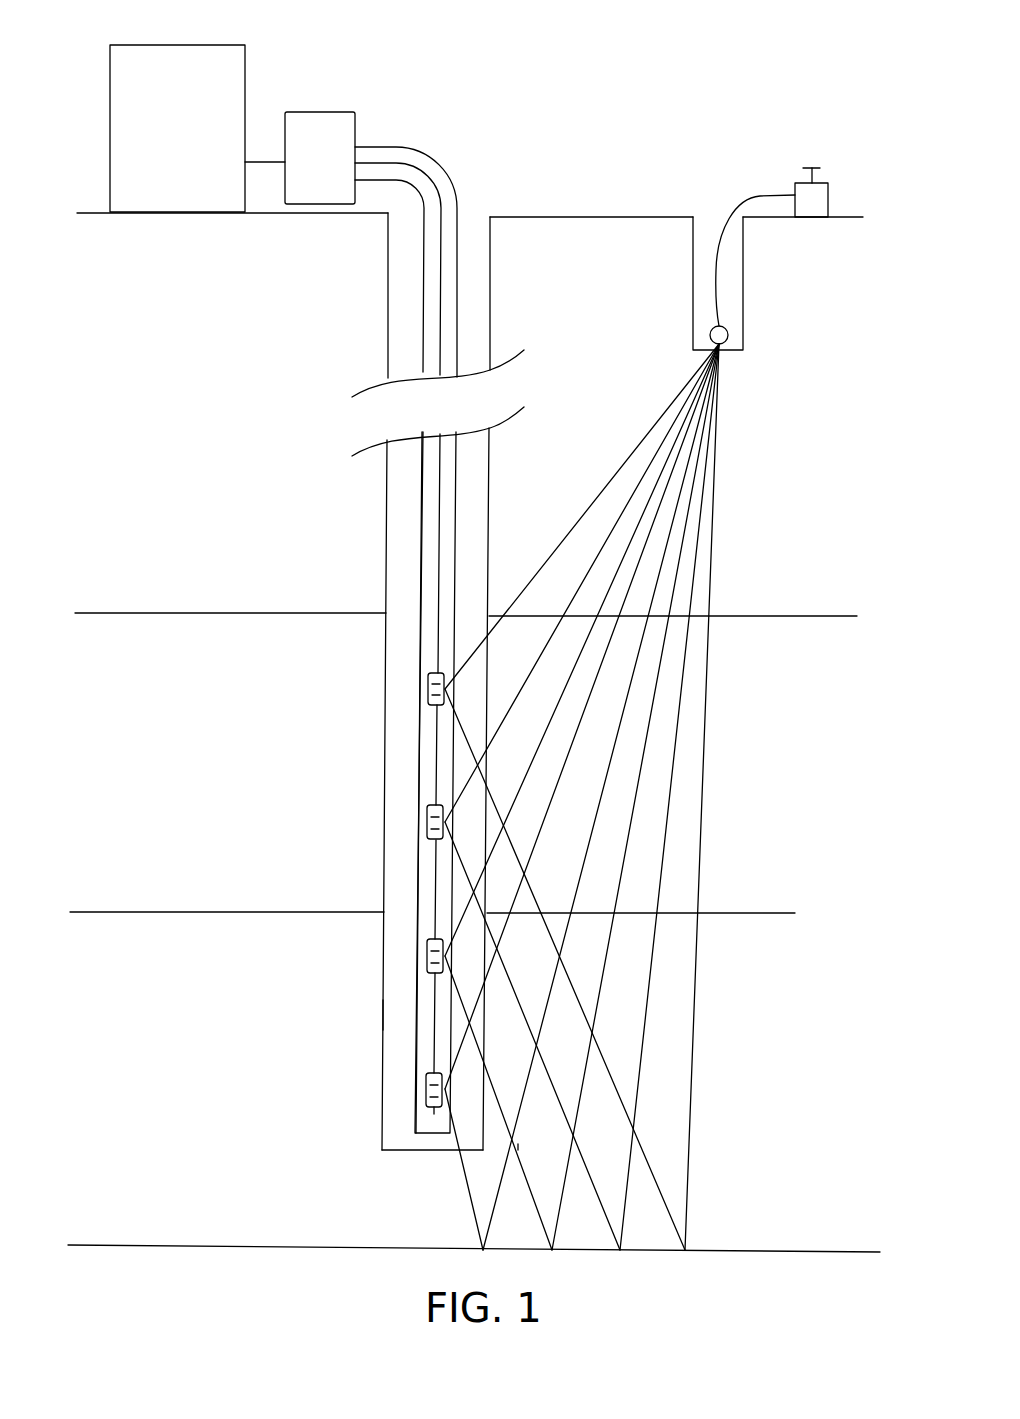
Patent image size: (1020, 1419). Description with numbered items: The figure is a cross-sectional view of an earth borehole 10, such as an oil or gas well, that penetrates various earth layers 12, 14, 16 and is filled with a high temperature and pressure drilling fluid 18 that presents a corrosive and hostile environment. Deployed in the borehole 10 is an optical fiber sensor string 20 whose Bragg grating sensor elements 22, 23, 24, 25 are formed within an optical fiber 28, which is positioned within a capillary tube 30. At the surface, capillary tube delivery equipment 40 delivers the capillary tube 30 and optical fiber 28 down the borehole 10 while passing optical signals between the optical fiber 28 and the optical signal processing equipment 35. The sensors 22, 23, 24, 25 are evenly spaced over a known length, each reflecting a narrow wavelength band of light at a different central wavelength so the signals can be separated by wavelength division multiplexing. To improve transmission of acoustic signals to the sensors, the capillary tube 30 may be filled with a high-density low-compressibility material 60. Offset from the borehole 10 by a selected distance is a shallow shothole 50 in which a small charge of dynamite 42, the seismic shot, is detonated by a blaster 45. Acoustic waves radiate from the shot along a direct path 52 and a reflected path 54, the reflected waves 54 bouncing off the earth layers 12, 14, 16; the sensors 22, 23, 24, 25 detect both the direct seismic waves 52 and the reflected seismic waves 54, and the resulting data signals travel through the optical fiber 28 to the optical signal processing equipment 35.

The borehole 10 is at (398, 498).
The earth layer 12 is at (142, 612).
The earth layer 14 is at (114, 911).
The earth layer 16 is at (146, 1245).
The drilling fluid 18 is at (400, 1015).
The optical fiber sensor string 20 is at (466, 190).
The Bragg grating sensor element 22 is at (428, 690).
The Bragg grating sensor element 23 is at (427, 826).
The Bragg grating sensor element 24 is at (427, 963).
The Bragg grating sensor element 25 is at (422, 1083).
The optical fiber 28 is at (437, 548).
The capillary tube 30 is at (419, 638).
The optical signal processing equipment 35 is at (168, 45).
The capillary tube delivery equipment 40 is at (302, 112).
The charge of dynamite 42 is at (730, 338).
The blaster 45 is at (832, 202).
The shothole 50 is at (742, 285).
The direct path 52 is at (648, 573).
The reflected path 54 is at (598, 725).
The high-density low-compressibility material 60 is at (427, 765).